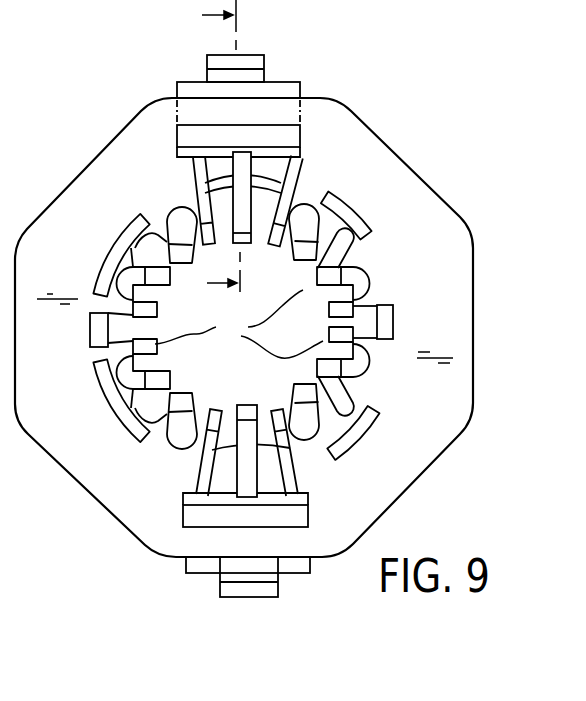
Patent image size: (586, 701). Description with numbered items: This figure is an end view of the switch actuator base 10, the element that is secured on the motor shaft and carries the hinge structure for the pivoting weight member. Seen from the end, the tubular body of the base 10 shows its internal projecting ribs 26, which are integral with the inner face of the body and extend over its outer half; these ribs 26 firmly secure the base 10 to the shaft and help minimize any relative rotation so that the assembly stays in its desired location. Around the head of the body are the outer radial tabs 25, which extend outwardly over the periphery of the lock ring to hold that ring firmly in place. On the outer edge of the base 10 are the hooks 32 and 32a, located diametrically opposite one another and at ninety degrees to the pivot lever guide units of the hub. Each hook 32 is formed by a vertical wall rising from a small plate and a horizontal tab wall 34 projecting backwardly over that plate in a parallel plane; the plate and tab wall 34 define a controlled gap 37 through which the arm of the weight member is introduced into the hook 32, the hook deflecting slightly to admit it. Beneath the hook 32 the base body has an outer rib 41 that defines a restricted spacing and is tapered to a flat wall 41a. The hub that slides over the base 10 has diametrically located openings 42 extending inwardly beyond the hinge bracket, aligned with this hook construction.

The switch actuator base 10 is at (234, 148).
The outer radial tabs 25 is at (347, 209).
The internal projecting ribs 26 is at (239, 324).
The hook 32 is at (237, 77).
The hook 32a is at (196, 590).
The horizontal tab wall 34 is at (221, 62).
The controlled gap 37 is at (212, 80).
The outer rib 41 is at (240, 183).
The flat wall 41a is at (248, 478).
The openings 42 is at (312, 131).